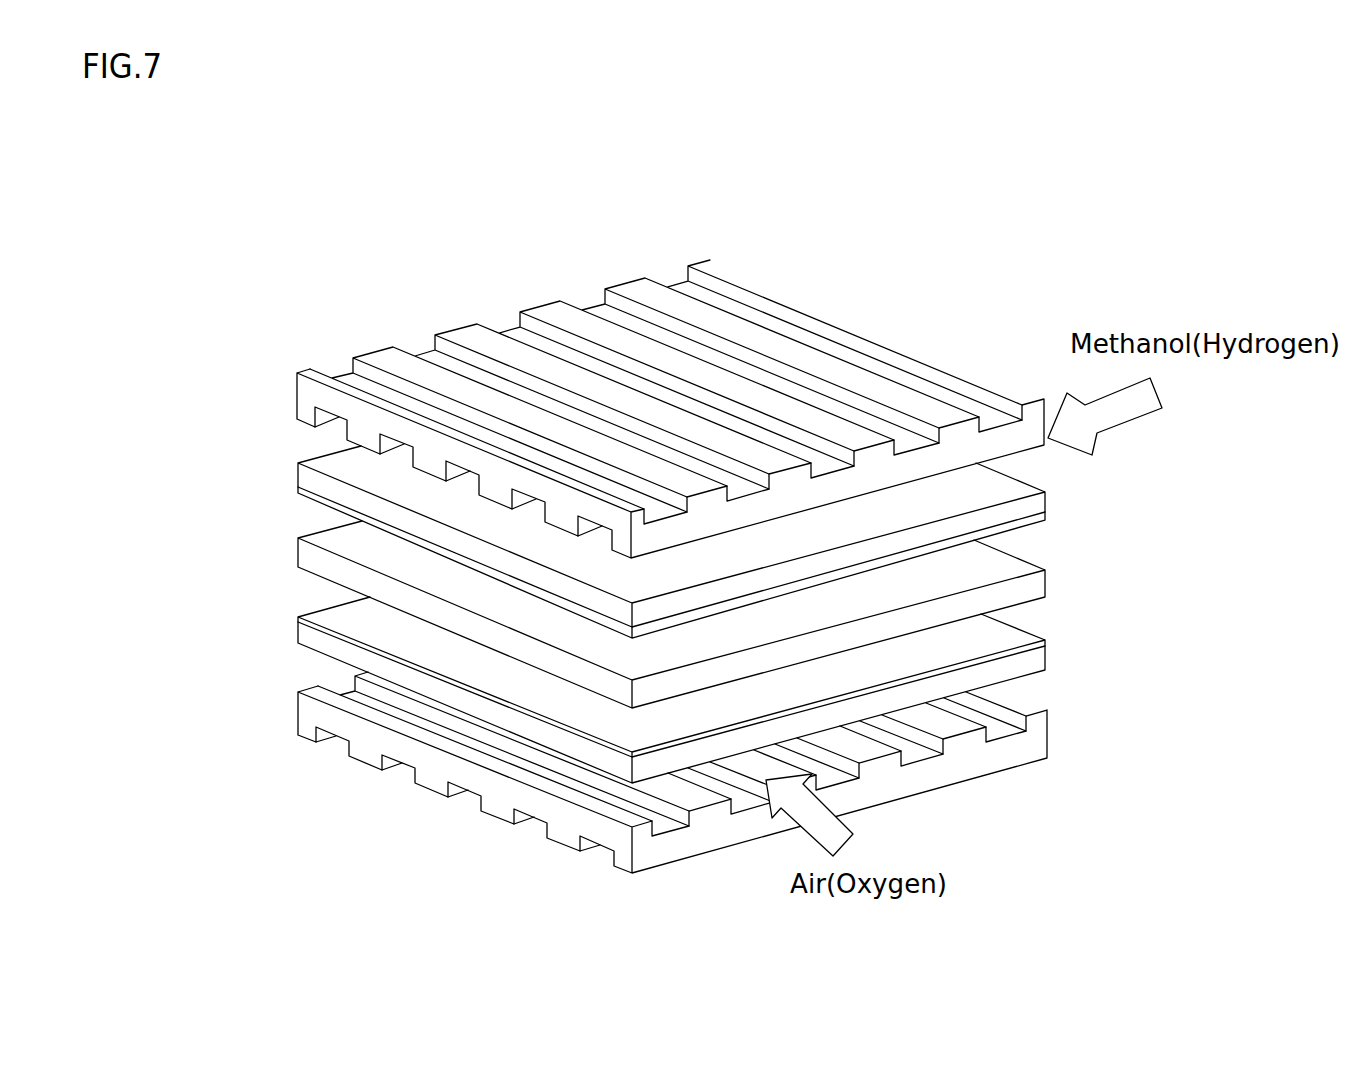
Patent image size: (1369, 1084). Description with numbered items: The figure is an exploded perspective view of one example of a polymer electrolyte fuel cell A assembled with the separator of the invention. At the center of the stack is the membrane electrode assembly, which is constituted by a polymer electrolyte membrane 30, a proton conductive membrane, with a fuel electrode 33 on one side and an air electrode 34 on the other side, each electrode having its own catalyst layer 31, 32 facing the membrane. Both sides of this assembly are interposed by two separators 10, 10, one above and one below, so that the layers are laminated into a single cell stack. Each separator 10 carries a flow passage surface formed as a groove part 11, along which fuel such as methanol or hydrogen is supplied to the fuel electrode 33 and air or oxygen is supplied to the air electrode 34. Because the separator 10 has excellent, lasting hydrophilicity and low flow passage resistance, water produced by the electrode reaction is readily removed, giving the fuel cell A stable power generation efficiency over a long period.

The fuel cell A is at (841, 293).
The separator 10 is at (297, 386).
The flow passage surface 11 is at (349, 371).
The polymer electrolyte membrane 30 is at (298, 562).
The catalyst layer 31 is at (298, 492).
The catalyst layer 32 is at (298, 643).
The fuel electrode 33 is at (298, 466).
The air electrode 34 is at (298, 617).